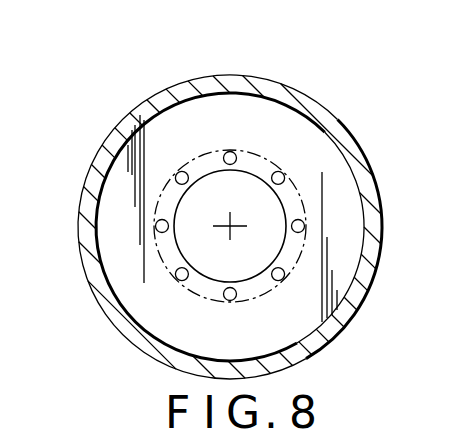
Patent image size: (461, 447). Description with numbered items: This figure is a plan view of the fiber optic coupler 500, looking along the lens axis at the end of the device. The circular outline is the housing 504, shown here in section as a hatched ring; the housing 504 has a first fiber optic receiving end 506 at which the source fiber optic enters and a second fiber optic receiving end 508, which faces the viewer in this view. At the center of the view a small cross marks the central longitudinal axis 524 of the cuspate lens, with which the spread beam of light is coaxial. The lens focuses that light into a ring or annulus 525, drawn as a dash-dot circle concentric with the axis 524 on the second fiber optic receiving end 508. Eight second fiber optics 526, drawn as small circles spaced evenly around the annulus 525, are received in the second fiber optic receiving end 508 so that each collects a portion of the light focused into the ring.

The fiber optic coupler 500 is at (101, 312).
The housing 504 is at (147, 127).
The first fiber optic receiving end 506 is at (72, 187).
The second fiber optic receiving end 508 is at (200, 113).
The central longitudinal axis 524 is at (240, 223).
The ring or annulus 525 is at (293, 259).
The second fiber optics 526 is at (236, 152).